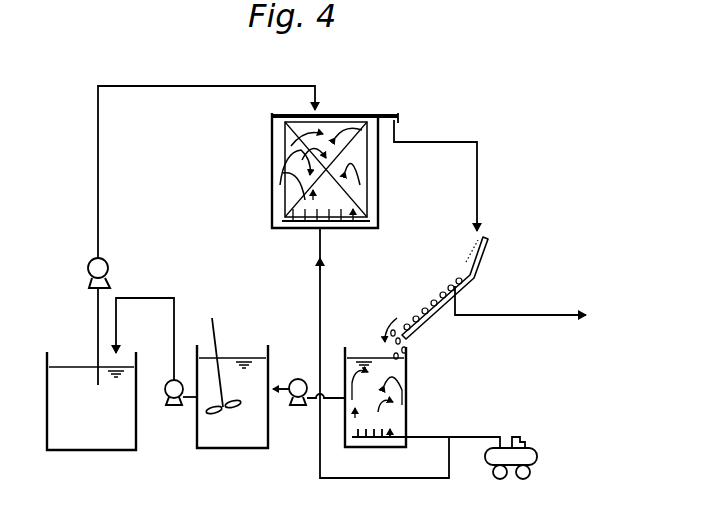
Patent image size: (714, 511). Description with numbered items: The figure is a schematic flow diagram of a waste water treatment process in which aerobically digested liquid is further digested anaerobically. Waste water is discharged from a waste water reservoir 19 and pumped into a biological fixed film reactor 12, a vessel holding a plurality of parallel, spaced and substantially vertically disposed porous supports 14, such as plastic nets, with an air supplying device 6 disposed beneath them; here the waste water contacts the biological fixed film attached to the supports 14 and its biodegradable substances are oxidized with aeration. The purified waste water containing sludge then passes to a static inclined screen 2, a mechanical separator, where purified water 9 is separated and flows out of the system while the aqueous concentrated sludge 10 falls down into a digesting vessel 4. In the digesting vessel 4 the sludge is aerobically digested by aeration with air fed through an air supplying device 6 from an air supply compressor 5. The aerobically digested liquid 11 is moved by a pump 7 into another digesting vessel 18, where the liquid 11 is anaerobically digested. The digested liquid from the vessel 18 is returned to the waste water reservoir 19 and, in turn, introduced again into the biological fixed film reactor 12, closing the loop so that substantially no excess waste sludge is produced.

The static inclined screen 2 is at (490, 247).
The digesting vessel 4 is at (408, 368).
The air supply compressor 5 is at (538, 450).
The air supplying device 6 is at (373, 447).
The pump 7 is at (297, 406).
The purified water 9 is at (531, 305).
The aqueous concentrated sludge 10 is at (405, 316).
The digested liquid 11 is at (298, 378).
The biological fixed film reactor 12 is at (379, 196).
The porous supports 14 is at (283, 173).
The digesting vessel 18 is at (222, 448).
The waste water reservoir 19 is at (92, 450).